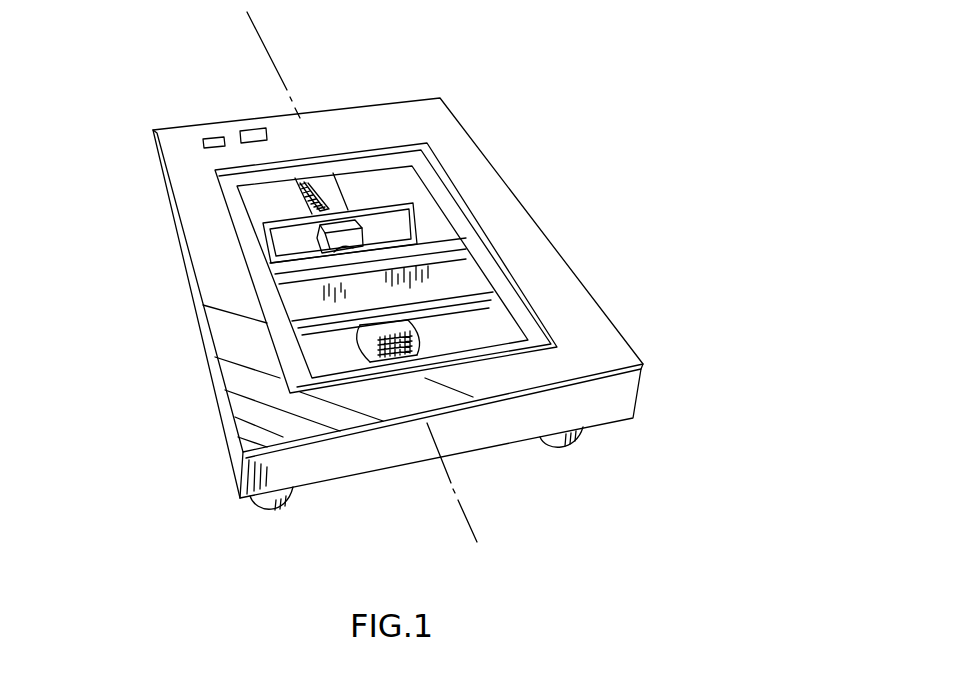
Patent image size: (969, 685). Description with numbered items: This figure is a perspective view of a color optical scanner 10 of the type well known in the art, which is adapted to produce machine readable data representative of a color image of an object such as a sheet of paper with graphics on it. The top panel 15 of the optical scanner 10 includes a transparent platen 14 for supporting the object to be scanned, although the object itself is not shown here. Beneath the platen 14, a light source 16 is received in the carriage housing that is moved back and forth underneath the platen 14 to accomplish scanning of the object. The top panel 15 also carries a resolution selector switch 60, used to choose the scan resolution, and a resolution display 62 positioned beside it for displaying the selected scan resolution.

The color optical scanner 10 is at (146, 76).
The transparent platen 14 is at (465, 282).
The top panel 15 is at (483, 177).
The light source 16 is at (455, 243).
The resolution selector switch 60 is at (210, 136).
The resolution display 62 is at (252, 131).